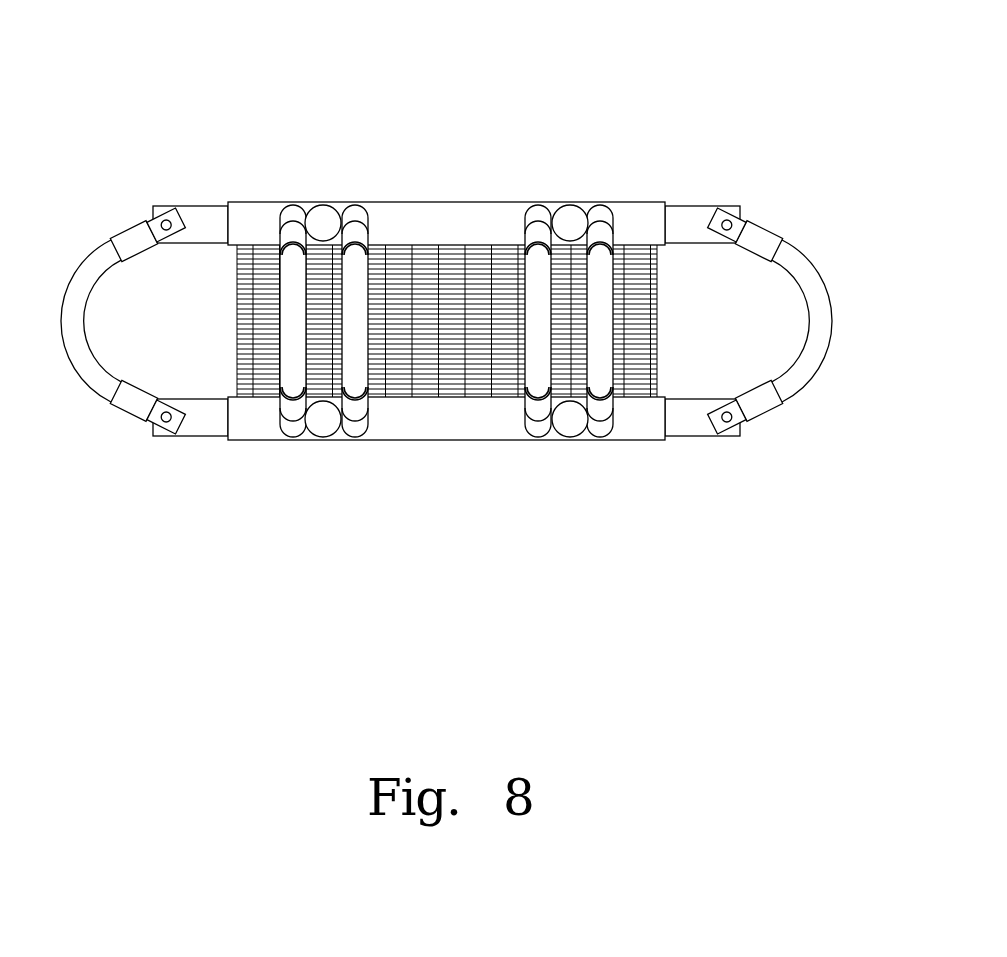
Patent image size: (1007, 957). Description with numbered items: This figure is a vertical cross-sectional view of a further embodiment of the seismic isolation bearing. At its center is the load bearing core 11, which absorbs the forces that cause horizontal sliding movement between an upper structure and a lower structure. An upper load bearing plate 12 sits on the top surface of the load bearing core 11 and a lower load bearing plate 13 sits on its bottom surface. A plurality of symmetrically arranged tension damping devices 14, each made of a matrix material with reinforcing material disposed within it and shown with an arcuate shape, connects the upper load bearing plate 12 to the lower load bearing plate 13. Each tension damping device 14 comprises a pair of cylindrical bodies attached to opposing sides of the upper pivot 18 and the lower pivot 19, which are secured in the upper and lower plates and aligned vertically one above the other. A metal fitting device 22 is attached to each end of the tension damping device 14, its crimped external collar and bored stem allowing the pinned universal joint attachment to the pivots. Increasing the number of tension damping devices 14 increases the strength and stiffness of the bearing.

The load bearing core 11 is at (460, 282).
The upper load bearing plate 12 is at (413, 203).
The lower load bearing plate 13 is at (637, 442).
The tension damping device 14 is at (100, 278).
The upper pivot 18 is at (207, 205).
The lower pivot 19 is at (203, 440).
The metal fitting device 22 is at (768, 415).